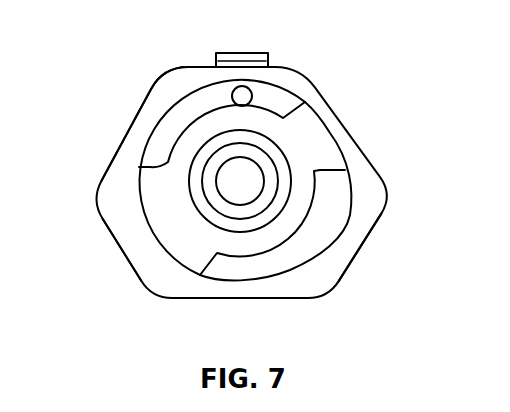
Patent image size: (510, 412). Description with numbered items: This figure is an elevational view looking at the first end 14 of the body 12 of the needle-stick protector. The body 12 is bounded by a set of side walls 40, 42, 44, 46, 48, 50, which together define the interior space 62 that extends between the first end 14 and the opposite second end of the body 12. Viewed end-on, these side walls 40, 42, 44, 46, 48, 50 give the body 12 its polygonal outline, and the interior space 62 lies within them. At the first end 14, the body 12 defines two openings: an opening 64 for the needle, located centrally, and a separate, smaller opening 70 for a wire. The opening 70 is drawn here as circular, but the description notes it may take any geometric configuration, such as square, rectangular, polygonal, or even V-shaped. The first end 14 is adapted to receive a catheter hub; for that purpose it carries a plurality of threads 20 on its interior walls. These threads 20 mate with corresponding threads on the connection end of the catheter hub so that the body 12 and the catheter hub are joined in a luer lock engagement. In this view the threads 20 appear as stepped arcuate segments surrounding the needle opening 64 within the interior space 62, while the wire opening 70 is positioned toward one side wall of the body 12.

The body 12 is at (213, 62).
The first end 14 is at (271, 63).
The threads 20 is at (160, 123).
The side wall 40 is at (170, 73).
The side wall 42 is at (116, 161).
The side wall 44 is at (131, 270).
The side wall 46 is at (240, 298).
The side wall 48 is at (352, 270).
The side wall 50 is at (352, 133).
The interior space 62 is at (320, 145).
The opening for the needle 64 is at (240, 181).
The opening for a wire 70 is at (243, 96).